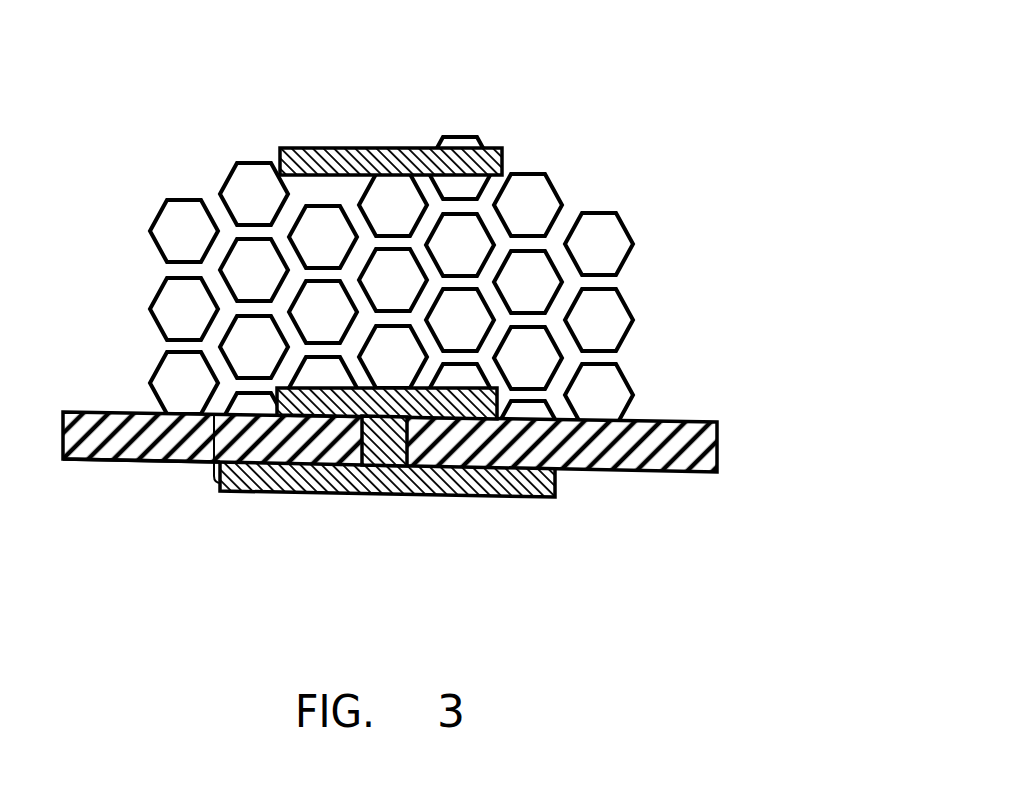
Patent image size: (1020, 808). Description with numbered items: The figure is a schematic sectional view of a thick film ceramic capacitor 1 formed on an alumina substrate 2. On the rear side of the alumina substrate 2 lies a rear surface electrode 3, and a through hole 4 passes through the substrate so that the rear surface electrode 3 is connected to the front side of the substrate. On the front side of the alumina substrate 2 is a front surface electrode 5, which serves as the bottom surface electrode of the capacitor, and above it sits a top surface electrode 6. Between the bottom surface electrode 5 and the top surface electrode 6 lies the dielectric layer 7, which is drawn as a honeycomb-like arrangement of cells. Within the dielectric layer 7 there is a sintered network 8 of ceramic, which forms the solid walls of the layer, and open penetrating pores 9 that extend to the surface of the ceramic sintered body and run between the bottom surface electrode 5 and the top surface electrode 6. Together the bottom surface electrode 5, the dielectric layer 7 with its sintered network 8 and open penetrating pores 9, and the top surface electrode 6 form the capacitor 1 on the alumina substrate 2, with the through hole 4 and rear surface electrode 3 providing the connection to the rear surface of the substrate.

The thick film ceramic capacitor 1 is at (334, 94).
The alumina substrate 2 is at (719, 443).
The rear surface electrode 3 is at (453, 493).
The through hole 4 is at (258, 490).
The front surface electrode 5 is at (177, 462).
The top surface electrode 6 is at (497, 148).
The dielectric layer 7 is at (148, 162).
The sintered network 8 is at (607, 232).
The open penetrating pores 9 is at (565, 302).